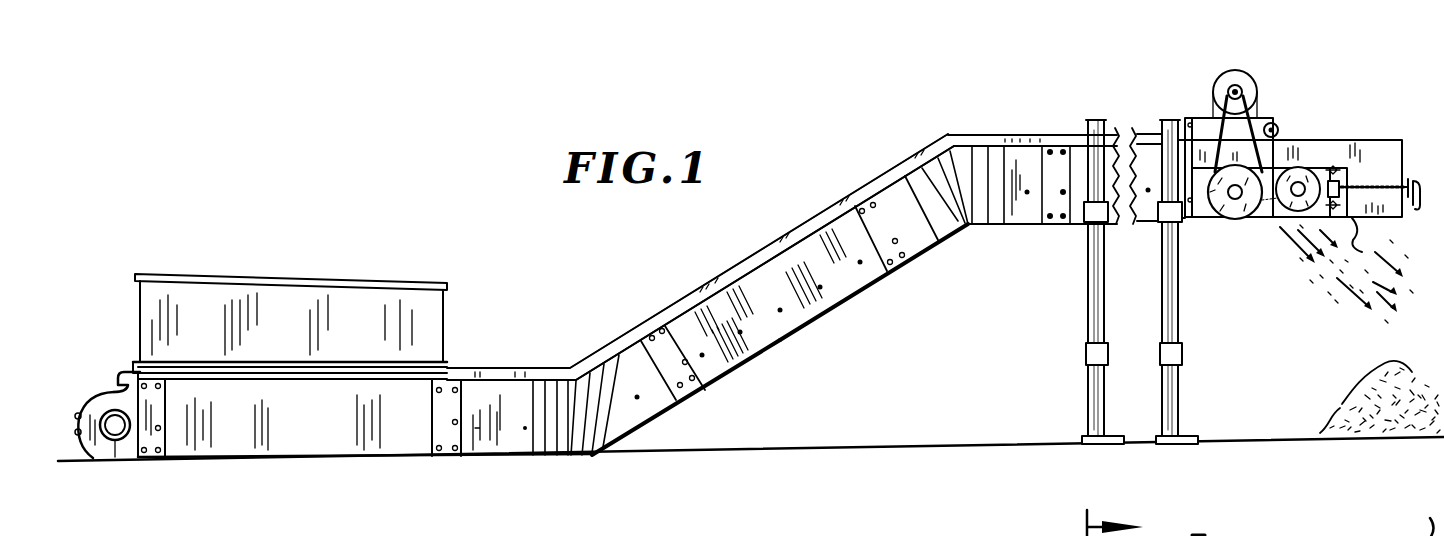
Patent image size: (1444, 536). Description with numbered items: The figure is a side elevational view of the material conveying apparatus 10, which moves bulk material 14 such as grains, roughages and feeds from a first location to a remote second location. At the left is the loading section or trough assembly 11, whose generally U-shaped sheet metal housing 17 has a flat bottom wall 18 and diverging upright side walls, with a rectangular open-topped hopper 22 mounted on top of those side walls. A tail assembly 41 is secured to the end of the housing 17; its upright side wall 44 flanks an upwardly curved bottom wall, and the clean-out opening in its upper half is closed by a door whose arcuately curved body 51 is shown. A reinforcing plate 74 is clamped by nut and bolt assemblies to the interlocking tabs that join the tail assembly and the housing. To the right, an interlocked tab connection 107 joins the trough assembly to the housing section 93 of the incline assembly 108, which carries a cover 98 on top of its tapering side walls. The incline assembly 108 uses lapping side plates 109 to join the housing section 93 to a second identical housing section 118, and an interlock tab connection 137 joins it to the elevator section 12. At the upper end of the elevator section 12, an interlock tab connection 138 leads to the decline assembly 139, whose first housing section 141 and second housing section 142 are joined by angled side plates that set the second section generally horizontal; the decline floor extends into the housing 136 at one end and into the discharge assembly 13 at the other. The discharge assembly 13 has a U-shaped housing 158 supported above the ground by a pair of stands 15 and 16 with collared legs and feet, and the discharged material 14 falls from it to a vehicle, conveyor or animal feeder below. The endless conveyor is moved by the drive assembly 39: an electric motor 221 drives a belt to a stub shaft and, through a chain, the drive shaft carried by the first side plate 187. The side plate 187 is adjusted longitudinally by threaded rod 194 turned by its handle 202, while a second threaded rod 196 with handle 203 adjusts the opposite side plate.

The material conveying apparatus 10 is at (424, 260).
The trough assembly 11 is at (331, 428).
The elevator section 12 is at (770, 332).
The discharge assembly 13 is at (1183, 66).
The discharged material 14 is at (1360, 325).
The stand 15 is at (1095, 308).
The stand 16 is at (1180, 312).
The housing 17 is at (395, 442).
The bottom wall 18 is at (1086, 519).
The hopper 22 is at (437, 302).
The drive assembly 39 is at (1281, 104).
The tail assembly 41 is at (103, 457).
The side wall 44 is at (128, 452).
The door body 51 is at (110, 390).
The reinforcing plate 74 is at (162, 442).
The housing section 93 is at (497, 392).
The cover 98 is at (745, 263).
The interlocked tab connection 107 is at (447, 450).
The incline assembly 108 is at (565, 350).
The side plate 109 is at (577, 445).
The housing section 118 is at (650, 398).
The housing 136 is at (842, 284).
The interlock tab connection 137 is at (650, 330).
The interlock tab connection 138 is at (858, 210).
The decline assembly 139 is at (947, 156).
The first housing section 141 is at (898, 197).
The second housing section 142 is at (1023, 212).
The housing 158 is at (1152, 153).
The first side plate 187 is at (1208, 207).
The threaded rod 194 is at (1370, 180).
The threaded rod 196 is at (1311, 525).
The handle 202 is at (1416, 206).
The handle 203 is at (1423, 511).
The electric motor 221 is at (1243, 80).